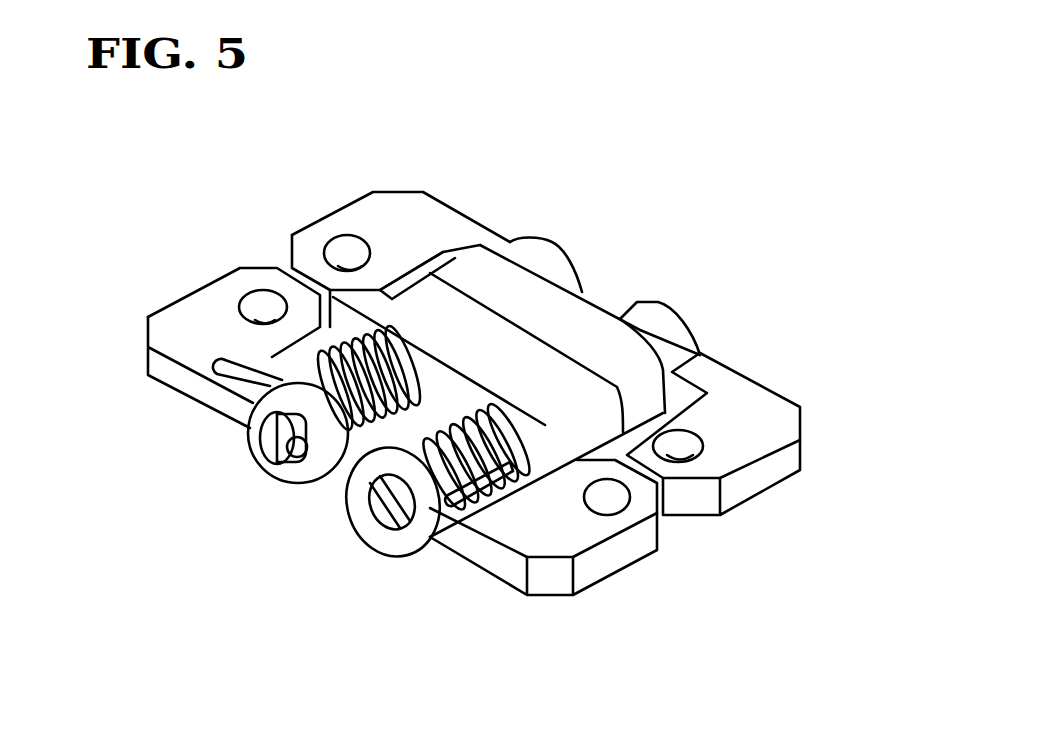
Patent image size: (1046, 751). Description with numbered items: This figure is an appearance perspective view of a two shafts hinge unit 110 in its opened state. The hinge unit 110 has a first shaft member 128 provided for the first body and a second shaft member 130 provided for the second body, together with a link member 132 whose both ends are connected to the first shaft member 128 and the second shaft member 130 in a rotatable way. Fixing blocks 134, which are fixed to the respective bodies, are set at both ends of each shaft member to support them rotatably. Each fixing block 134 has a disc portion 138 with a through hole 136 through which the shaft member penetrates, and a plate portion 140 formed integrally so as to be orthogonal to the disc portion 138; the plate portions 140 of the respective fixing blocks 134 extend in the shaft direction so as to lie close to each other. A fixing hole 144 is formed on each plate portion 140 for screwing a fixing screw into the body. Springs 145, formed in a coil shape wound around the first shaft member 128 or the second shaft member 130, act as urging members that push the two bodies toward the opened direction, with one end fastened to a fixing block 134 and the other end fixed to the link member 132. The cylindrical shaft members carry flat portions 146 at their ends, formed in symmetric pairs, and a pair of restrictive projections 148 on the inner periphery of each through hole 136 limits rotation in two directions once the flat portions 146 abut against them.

The two shafts hinge unit 110 is at (675, 170).
The first shaft member 128 is at (265, 455).
The second shaft member 130 is at (417, 543).
The link member 132 is at (577, 307).
The fixing block 134 is at (440, 217).
The through hole 136 is at (298, 462).
The disc portion 138 is at (543, 250).
The plate portion 140 is at (368, 207).
The fixing hole 144 is at (340, 250).
The spring 145 is at (565, 525).
The flat portion 146 is at (277, 430).
The restrictive projection 148 is at (390, 283).